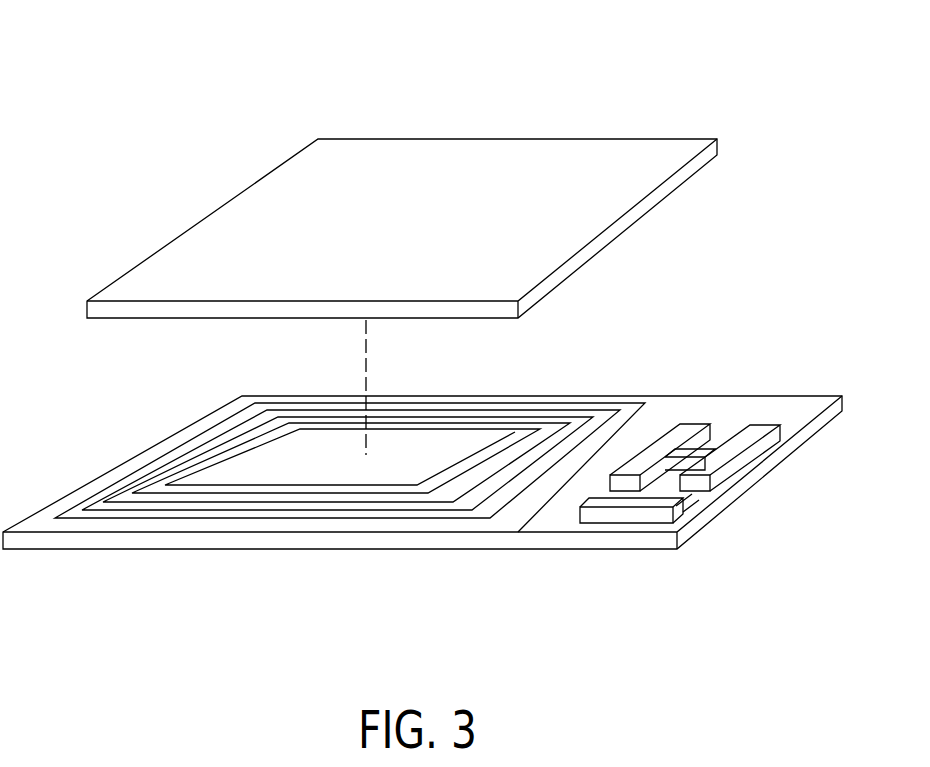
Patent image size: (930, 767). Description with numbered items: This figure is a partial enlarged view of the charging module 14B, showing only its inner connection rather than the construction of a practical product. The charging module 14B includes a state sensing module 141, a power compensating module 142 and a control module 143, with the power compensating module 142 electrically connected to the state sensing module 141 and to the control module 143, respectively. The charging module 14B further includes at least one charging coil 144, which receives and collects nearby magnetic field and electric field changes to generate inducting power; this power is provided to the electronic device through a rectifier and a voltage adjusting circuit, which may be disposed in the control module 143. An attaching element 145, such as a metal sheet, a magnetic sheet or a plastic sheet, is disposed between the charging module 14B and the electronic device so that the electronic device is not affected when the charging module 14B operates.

The charging module 14B is at (214, 111).
The attaching element 145 is at (643, 160).
The charging coil 144 is at (610, 408).
The control module 143 is at (697, 423).
The power compensating module 142 is at (763, 430).
The state sensing module 141 is at (638, 515).